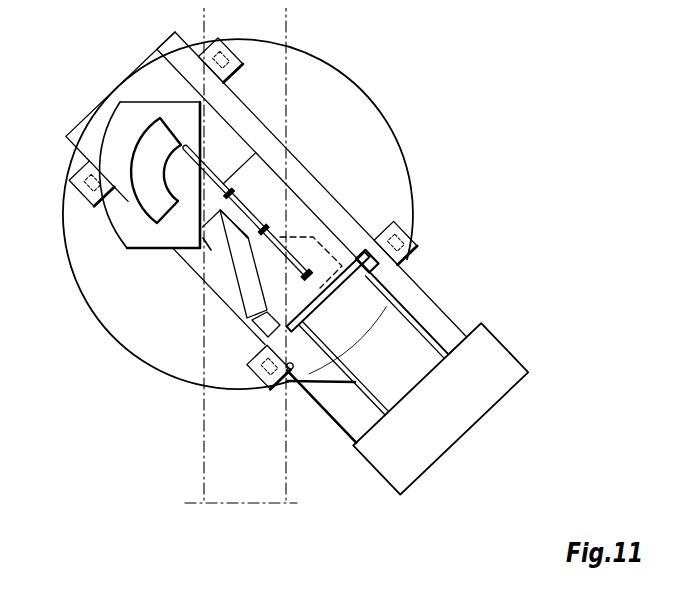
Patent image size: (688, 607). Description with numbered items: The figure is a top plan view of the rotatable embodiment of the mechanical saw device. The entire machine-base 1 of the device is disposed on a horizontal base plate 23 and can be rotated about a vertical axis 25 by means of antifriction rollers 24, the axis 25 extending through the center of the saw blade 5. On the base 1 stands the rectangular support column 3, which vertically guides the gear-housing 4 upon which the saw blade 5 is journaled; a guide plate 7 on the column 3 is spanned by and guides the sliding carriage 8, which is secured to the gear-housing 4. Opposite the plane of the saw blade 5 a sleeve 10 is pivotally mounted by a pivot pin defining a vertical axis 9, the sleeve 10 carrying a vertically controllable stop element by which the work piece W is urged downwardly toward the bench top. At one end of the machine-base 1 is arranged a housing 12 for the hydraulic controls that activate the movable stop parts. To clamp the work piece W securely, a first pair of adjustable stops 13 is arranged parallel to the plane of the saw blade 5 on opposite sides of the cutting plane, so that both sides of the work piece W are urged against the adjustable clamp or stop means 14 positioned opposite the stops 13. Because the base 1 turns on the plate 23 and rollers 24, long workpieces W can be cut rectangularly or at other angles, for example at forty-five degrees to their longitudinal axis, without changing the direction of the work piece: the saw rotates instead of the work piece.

The machine-base 1 is at (116, 106).
The support column 3 is at (403, 322).
The gear-housing 4 is at (318, 202).
The saw blade 5 is at (207, 171).
The guide plate 7 is at (344, 280).
The sliding carriage 8 is at (380, 263).
The vertical axis 9 is at (292, 372).
The sleeve 10 is at (247, 283).
The housing for hydraulic controls 12 is at (476, 409).
The adjustable stops 13 is at (262, 307).
The adjustable clamp or stop means 14 is at (142, 180).
The horizontal base plate 23 is at (360, 101).
The antifriction rollers 24 is at (238, 57).
The vertical axis 25 is at (208, 256).
The work piece W is at (222, 462).